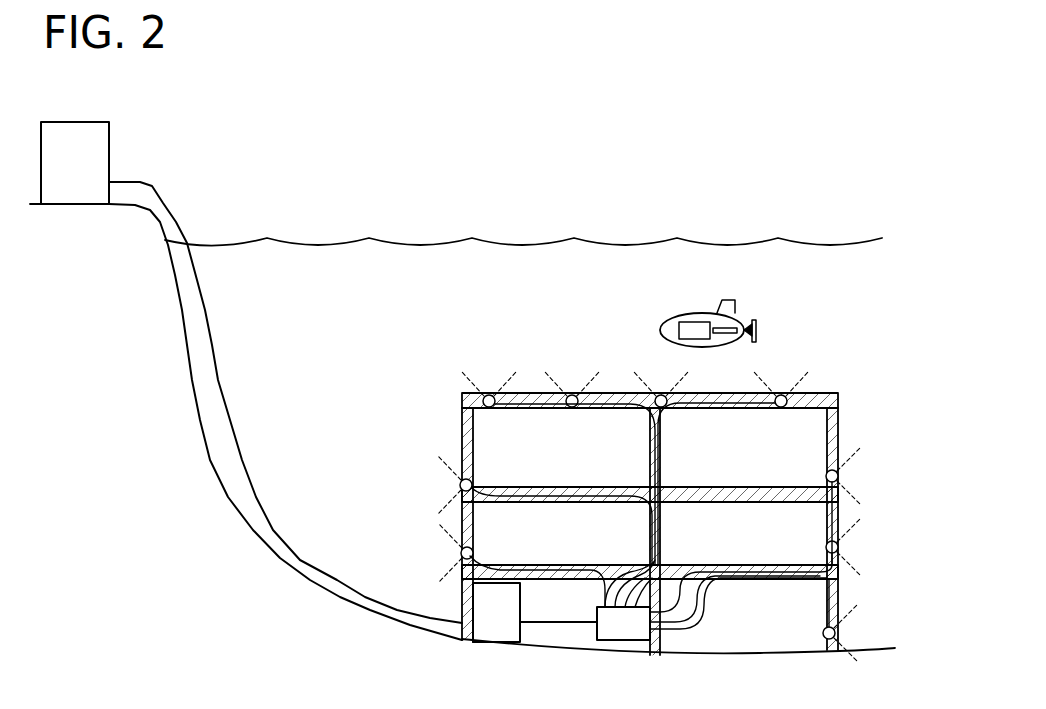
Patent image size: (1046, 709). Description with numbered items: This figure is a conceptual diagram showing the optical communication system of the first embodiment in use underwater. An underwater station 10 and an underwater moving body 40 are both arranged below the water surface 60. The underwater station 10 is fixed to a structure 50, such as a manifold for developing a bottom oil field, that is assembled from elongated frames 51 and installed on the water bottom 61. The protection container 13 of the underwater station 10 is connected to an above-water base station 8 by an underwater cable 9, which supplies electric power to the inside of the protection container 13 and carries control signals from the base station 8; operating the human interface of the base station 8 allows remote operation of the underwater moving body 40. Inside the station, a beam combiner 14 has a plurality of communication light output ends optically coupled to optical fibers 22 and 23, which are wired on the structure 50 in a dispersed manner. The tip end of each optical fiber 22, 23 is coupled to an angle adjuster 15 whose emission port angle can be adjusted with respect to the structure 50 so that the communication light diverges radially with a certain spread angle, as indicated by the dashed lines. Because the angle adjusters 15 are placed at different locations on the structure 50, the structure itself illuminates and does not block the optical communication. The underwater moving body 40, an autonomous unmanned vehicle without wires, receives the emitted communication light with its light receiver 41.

The above-water base station 8 is at (110, 146).
The underwater cable 9 is at (228, 397).
The underwater station 10 is at (564, 572).
The protection container 13 is at (493, 582).
The beam combiner 14 is at (620, 587).
The angle adjuster 15 is at (583, 407).
The optical fiber 22 is at (742, 569).
The optical fiber 23 is at (651, 591).
The underwater moving body 40 is at (685, 304).
The light receiver 41 is at (694, 322).
The structure 50 is at (439, 409).
The elongated frame 51 is at (525, 393).
The water surface 60 is at (405, 247).
The water bottom 61 is at (878, 649).